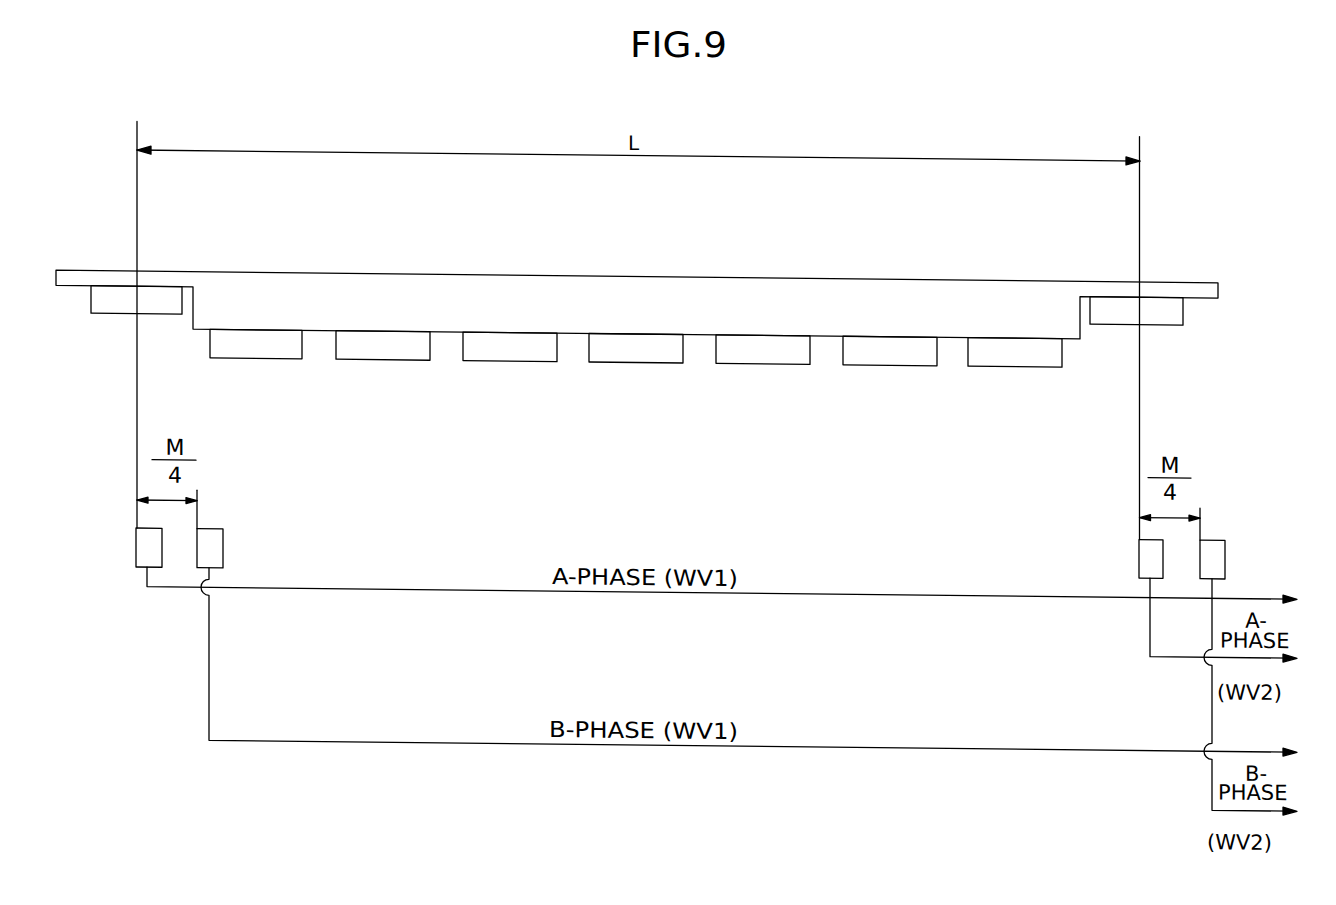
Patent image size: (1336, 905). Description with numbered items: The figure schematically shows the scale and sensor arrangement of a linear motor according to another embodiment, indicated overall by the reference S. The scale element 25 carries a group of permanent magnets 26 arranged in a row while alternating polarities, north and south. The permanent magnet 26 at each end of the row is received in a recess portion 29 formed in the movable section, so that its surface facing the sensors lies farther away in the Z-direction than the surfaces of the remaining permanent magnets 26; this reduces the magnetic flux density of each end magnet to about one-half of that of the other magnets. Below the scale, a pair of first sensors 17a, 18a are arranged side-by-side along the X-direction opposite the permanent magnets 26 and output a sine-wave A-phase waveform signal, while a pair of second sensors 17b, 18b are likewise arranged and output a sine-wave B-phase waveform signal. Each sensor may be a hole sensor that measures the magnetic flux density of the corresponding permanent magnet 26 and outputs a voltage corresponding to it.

The scale 25 is at (1187, 270).
The permanent magnet 26 is at (161, 296).
The recess portion 29 is at (73, 286).
The first sensor 17a is at (145, 541).
The second sensor 17b is at (213, 545).
The first sensor 18a is at (1148, 545).
The second sensor 18b is at (1217, 544).
The position detection system S is at (1240, 135).